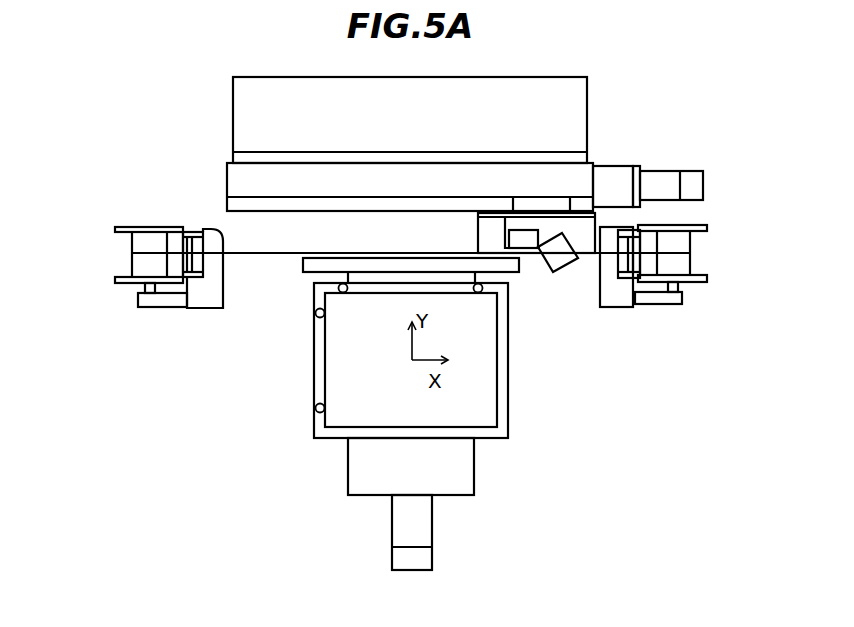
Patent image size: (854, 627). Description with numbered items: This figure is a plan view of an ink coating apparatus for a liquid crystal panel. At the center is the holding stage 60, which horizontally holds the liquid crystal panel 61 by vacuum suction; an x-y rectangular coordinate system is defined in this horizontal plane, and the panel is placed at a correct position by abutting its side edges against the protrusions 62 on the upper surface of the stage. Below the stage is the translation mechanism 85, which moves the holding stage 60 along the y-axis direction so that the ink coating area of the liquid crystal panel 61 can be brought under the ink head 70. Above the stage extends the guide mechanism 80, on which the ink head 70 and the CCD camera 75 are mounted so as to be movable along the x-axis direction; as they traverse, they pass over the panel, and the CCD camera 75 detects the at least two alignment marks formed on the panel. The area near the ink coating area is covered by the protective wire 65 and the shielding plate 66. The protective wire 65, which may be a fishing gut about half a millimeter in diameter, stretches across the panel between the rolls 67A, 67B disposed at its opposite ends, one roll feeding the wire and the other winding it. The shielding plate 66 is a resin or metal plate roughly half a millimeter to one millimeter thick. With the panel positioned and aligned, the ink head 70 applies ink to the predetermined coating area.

The holding stage 60 is at (443, 360).
The liquid crystal panel 61 is at (444, 360).
The protrusions 62 is at (373, 362).
The protective wire 65 is at (411, 281).
The shielding plate 66 is at (427, 293).
The roll 67A is at (686, 266).
The roll 67B is at (136, 267).
The ink head 70 is at (569, 288).
The CCD camera 75 is at (564, 184).
The guide mechanism 80 is at (377, 192).
The translation mechanism 85 is at (450, 504).